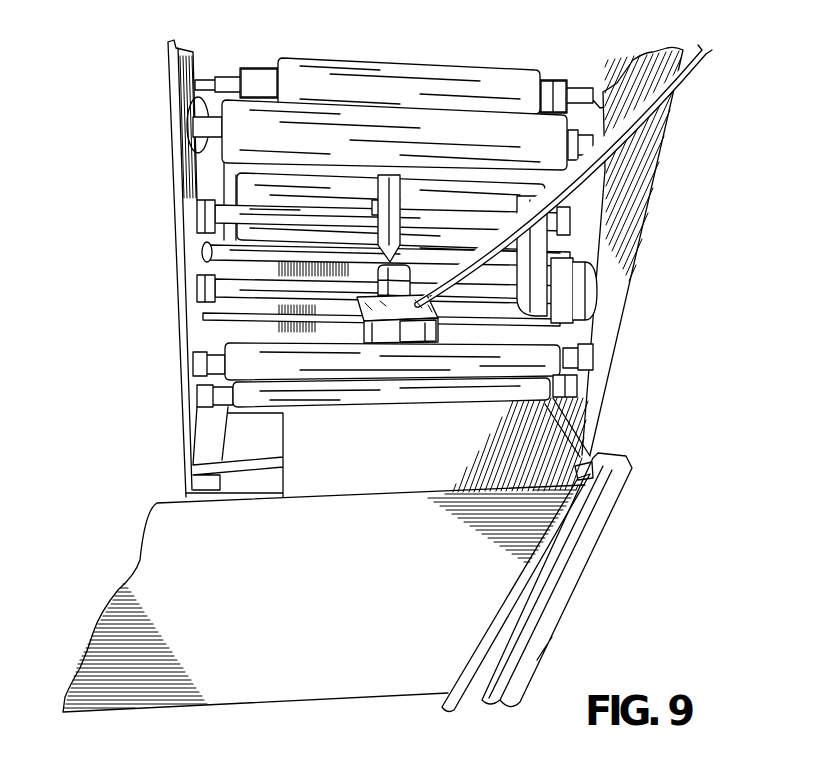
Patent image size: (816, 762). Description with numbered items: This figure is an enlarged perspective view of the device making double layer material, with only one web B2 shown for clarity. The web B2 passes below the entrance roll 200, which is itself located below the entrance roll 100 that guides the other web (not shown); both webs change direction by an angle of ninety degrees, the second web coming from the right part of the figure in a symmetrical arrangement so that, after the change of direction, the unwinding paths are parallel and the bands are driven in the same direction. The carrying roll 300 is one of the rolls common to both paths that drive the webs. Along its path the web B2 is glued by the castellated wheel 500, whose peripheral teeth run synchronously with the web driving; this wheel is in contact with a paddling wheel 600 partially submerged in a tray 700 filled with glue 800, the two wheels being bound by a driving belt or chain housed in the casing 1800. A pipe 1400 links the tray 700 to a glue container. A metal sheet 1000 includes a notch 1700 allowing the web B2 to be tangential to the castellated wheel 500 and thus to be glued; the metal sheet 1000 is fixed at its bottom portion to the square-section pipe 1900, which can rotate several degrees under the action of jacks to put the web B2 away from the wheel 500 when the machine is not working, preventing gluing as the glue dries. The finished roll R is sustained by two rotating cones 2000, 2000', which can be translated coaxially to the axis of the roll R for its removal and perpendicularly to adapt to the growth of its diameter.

The roll R is at (425, 77).
The rotating cone 2000' is at (284, 58).
The rotating cone 2000 is at (579, 75).
The carrying roll 300 is at (262, 140).
The metal sheet 1000 is at (247, 193).
The square-section pipe 1900 is at (457, 258).
The notch 1700 is at (380, 172).
The castellated wheel 500 is at (383, 175).
The paddling wheel 600 is at (358, 300).
The tray 700 is at (380, 333).
The glue 800 is at (410, 318).
The entrance roll 100 is at (260, 376).
The entrance roll 200 is at (255, 405).
The casing 1800 is at (527, 247).
The pipe 1400 is at (700, 70).
The web B2 is at (324, 617).